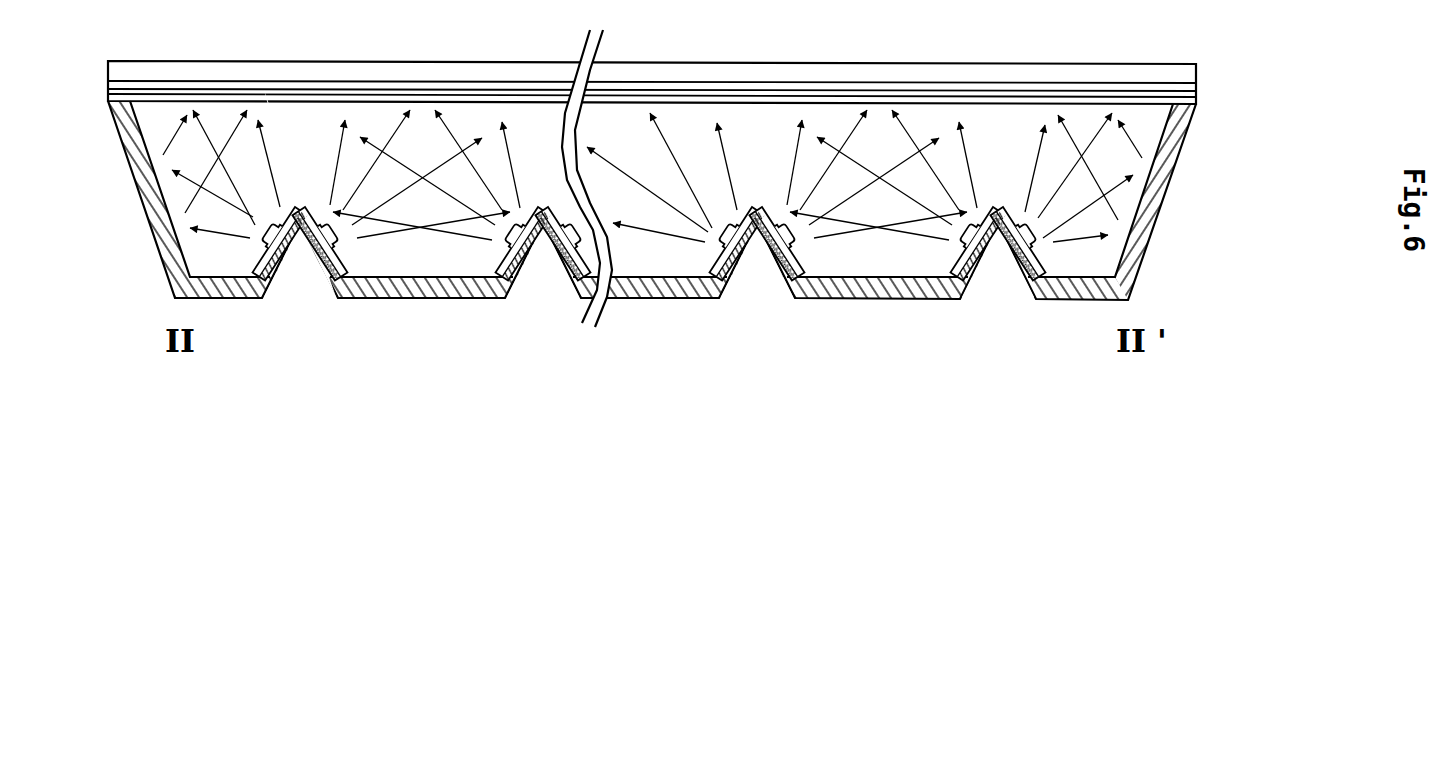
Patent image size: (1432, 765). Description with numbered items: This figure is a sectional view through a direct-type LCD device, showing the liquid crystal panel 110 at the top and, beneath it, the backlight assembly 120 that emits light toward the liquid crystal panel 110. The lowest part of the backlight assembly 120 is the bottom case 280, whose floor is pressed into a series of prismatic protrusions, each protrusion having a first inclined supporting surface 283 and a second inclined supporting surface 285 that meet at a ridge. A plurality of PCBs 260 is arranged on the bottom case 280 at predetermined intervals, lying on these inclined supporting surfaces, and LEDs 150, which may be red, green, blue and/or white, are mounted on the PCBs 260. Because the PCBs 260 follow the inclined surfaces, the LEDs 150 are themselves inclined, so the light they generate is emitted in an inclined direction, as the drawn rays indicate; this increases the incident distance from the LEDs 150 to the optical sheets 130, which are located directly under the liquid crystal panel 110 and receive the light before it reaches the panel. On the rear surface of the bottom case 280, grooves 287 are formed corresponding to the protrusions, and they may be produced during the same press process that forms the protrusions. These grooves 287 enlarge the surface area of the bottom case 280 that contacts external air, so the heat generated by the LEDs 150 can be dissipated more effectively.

The liquid crystal panel 110 is at (1192, 76).
The backlight assembly 120 is at (732, 215).
The optical sheets 130 is at (1200, 86).
The LEDs 150 is at (1040, 242).
The PCBs 260 is at (1048, 266).
The bottom case 280 is at (695, 248).
The first inclined supporting surface 283 is at (1010, 288).
The second inclined supporting surface 285 is at (982, 266).
The grooves 287 is at (743, 285).